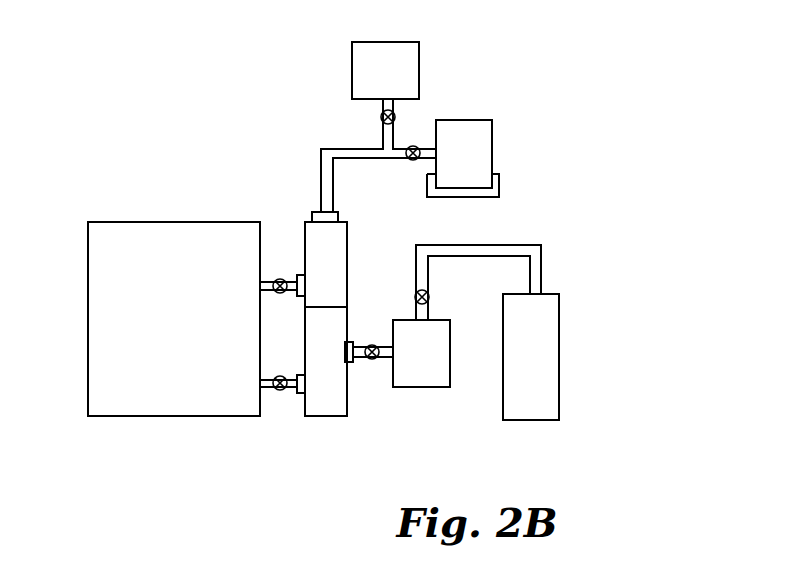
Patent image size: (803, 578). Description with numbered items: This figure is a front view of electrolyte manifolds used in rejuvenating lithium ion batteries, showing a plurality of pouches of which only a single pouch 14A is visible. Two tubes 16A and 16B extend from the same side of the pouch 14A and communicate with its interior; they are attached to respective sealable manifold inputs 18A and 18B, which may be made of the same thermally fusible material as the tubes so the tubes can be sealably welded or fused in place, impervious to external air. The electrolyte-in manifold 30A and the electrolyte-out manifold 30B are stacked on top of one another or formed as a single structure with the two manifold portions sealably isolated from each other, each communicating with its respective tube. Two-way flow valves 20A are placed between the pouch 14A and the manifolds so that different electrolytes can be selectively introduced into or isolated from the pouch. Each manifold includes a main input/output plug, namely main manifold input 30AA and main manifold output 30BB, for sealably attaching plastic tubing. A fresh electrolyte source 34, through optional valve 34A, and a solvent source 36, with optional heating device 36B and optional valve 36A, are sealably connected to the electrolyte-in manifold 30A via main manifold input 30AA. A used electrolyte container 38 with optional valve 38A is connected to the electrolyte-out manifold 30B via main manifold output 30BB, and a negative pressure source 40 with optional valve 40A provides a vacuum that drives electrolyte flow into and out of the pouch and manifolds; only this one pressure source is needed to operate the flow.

The pouch 14A is at (196, 236).
The tube 16A is at (271, 278).
The sealable manifold input 18A is at (299, 274).
The two-way flow valve 20A is at (273, 390).
The tube 16B is at (270, 390).
The sealable manifold input 18B is at (297, 394).
The electrolyte-in manifold 30A is at (340, 248).
The electrolyte-out manifold 30B is at (333, 403).
The main manifold input plug 30AA is at (338, 216).
The main manifold output plug 30BB is at (351, 346).
The fresh electrolyte source 34 is at (394, 68).
The valve 34A is at (382, 117).
The solvent source 36 is at (466, 140).
The valve 36A is at (326, 153).
The heating device 36B is at (497, 186).
The used electrolyte container 38 is at (437, 378).
The valve 38A is at (375, 347).
The negative pressure source 40 is at (547, 355).
The valve 40A is at (429, 297).